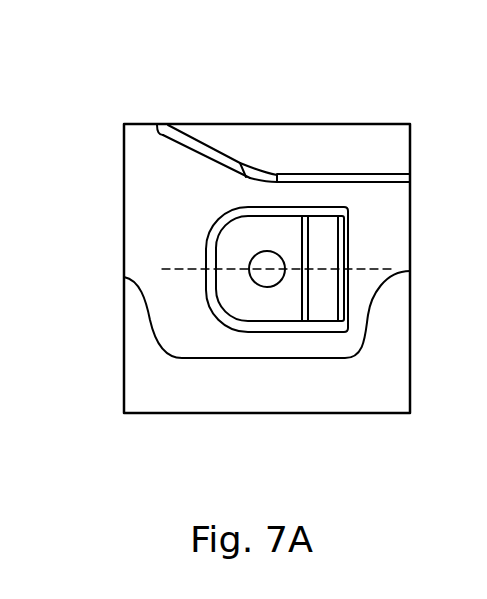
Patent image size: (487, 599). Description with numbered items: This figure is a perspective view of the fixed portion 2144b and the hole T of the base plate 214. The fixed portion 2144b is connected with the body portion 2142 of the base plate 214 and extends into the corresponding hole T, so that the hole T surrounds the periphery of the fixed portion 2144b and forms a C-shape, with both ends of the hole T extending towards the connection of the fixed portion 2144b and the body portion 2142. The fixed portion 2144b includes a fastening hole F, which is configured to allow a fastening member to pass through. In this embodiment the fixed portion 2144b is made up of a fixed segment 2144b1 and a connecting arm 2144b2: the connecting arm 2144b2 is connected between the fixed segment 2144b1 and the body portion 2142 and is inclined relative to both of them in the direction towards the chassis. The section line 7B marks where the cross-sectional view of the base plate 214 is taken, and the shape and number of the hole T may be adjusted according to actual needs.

The base plate 214 is at (92, 86).
The body portion 2142 is at (147, 217).
The fixed portion 2144b is at (388, 86).
The fixed segment 2144b1 is at (256, 233).
The connecting arm 2144b2 is at (321, 232).
The hole T is at (231, 323).
The fastening hole F is at (265, 284).
The line 7B- 7B is at (393, 278).